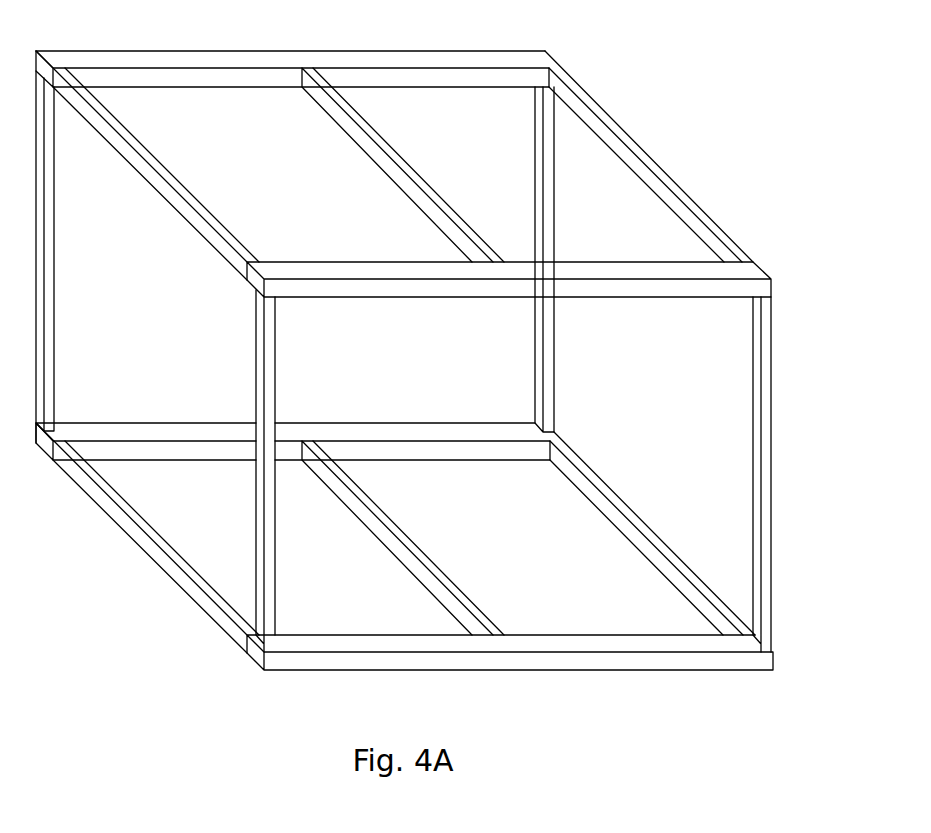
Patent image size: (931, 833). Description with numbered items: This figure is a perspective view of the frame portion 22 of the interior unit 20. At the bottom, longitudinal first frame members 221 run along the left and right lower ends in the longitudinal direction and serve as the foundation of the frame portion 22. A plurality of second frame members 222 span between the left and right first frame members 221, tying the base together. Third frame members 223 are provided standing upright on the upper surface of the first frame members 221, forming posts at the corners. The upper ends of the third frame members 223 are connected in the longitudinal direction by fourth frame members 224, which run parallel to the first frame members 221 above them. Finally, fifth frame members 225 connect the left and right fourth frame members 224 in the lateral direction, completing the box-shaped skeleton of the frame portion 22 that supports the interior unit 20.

The interior unit 20 is at (709, 52).
The frame portion 22 is at (729, 186).
The first frame member 221 is at (487, 460).
The second frame member 222 is at (166, 540).
The third frame member 223 is at (54, 212).
The fourth frame member 224 is at (420, 60).
The fifth frame member 225 is at (165, 167).